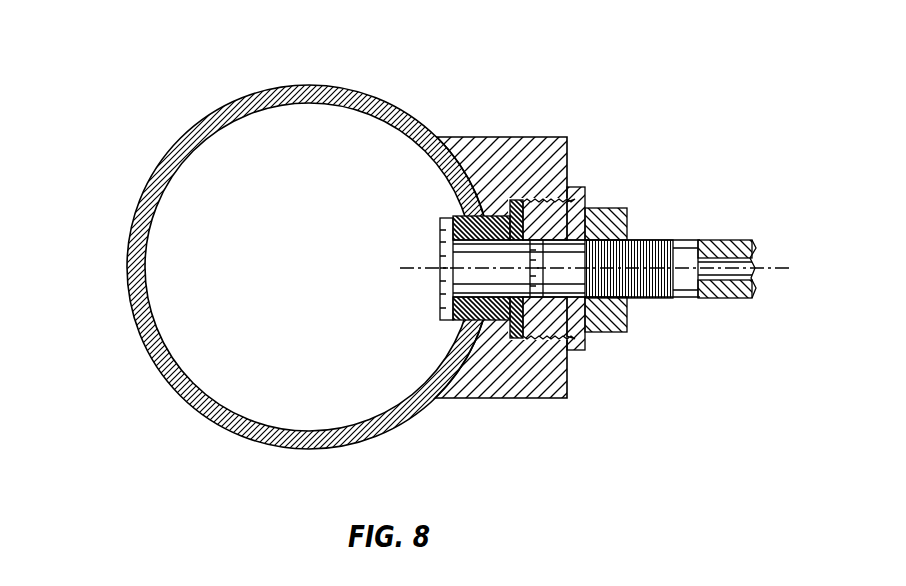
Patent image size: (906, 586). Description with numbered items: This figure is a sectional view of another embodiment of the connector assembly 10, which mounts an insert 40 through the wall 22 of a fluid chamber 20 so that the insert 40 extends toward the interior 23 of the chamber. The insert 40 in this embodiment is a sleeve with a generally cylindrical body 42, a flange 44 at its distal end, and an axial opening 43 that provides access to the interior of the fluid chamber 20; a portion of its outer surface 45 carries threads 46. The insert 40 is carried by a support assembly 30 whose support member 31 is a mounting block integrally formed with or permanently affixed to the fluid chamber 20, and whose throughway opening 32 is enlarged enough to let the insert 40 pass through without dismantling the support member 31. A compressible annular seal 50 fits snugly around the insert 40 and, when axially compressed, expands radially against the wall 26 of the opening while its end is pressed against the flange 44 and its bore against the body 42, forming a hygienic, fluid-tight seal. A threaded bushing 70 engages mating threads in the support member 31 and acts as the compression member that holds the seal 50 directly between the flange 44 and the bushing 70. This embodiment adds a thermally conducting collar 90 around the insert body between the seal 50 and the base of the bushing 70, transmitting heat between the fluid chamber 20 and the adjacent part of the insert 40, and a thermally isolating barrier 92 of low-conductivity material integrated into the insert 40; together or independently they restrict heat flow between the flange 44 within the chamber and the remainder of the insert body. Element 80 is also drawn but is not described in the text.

The connector assembly 10 is at (422, 235).
The fluid chamber 20 is at (261, 268).
The wall 22 is at (157, 173).
The interior 23 is at (207, 266).
The wall of the opening 26 is at (481, 322).
The support assembly 30 is at (519, 235).
The support member 31 is at (567, 137).
The throughway opening 32 is at (462, 217).
The insert 40 is at (601, 281).
The body 42 is at (645, 282).
The axial opening 43 is at (698, 225).
The flange 44 is at (440, 240).
The outer surface 45 is at (587, 352).
The threads 46 is at (648, 300).
The seal 50 is at (458, 217).
The bushing 70 is at (583, 187).
The nut 80 is at (608, 208).
The thermally conducting collar 90 is at (518, 325).
The thermally isolating barrier 92 is at (520, 237).